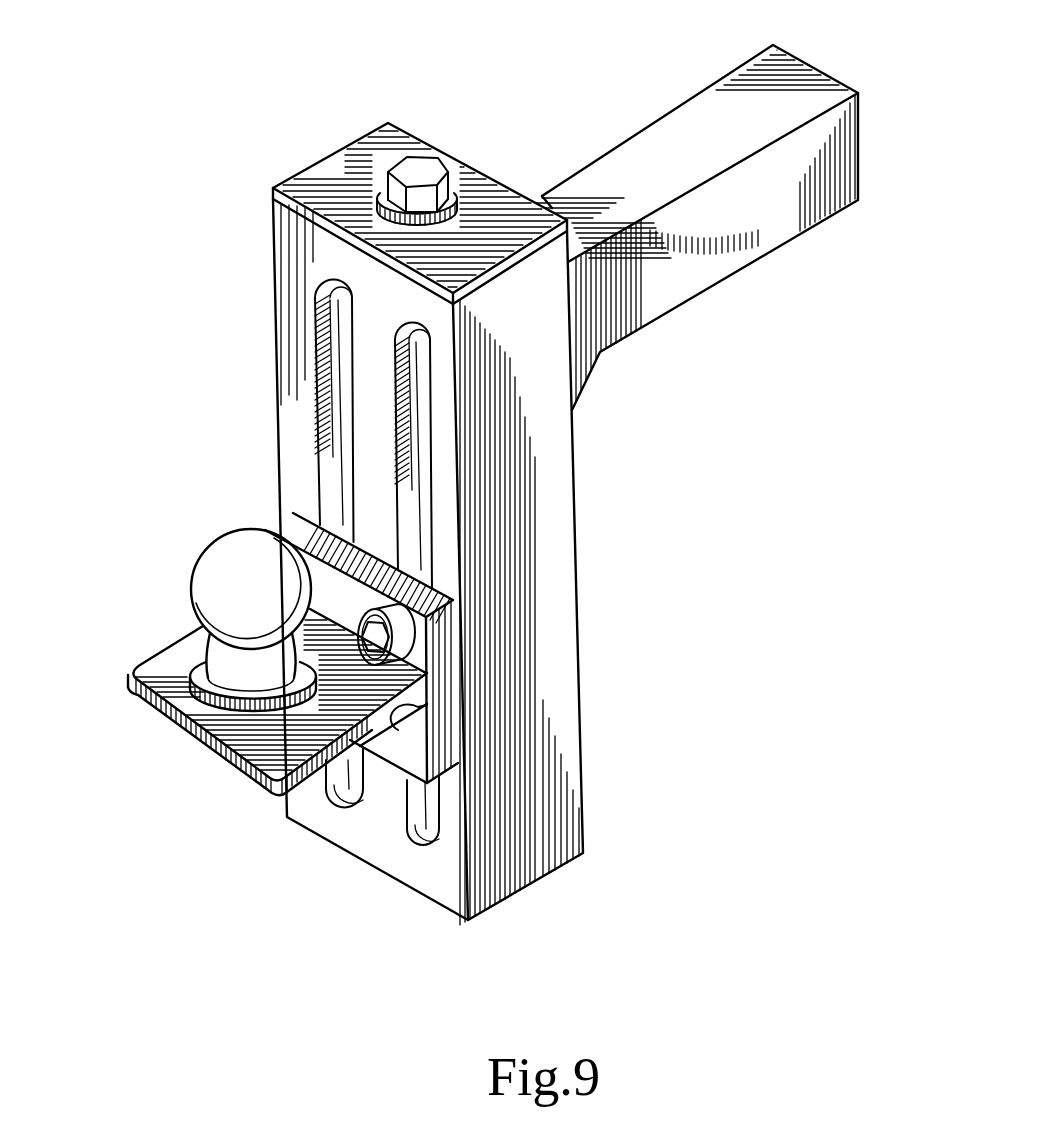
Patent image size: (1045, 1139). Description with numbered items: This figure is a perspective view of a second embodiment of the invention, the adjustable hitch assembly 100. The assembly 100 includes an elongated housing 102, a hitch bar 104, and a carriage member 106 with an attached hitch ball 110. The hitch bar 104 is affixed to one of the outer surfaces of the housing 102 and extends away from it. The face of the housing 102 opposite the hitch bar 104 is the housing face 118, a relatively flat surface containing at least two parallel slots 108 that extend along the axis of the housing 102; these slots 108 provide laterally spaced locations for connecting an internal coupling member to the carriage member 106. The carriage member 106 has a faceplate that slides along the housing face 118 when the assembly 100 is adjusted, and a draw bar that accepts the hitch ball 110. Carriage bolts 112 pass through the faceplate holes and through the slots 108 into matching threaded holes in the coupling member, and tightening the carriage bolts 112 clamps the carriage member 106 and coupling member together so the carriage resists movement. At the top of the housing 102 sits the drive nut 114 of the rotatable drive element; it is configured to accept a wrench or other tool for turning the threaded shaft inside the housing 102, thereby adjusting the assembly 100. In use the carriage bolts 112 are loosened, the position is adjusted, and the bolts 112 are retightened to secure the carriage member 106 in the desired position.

The adjustable hitch assembly 100 is at (246, 181).
The elongated housing 102 is at (248, 256).
The hitch bar 104 is at (760, 230).
The carriage member 106 is at (207, 745).
The slots 108 is at (338, 374).
The hitch ball 110 is at (223, 593).
The carriage bolts 112 is at (403, 640).
The drive nut 114 is at (415, 172).
The housing face 118 is at (372, 299).